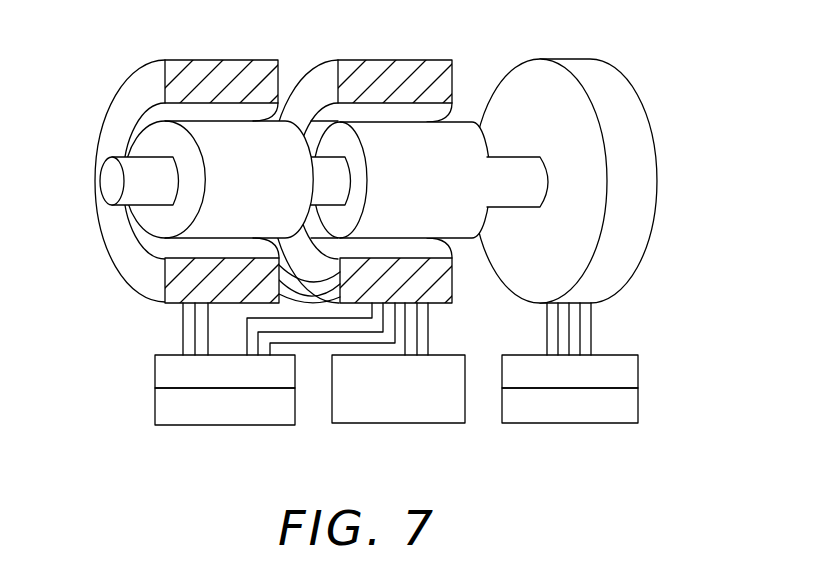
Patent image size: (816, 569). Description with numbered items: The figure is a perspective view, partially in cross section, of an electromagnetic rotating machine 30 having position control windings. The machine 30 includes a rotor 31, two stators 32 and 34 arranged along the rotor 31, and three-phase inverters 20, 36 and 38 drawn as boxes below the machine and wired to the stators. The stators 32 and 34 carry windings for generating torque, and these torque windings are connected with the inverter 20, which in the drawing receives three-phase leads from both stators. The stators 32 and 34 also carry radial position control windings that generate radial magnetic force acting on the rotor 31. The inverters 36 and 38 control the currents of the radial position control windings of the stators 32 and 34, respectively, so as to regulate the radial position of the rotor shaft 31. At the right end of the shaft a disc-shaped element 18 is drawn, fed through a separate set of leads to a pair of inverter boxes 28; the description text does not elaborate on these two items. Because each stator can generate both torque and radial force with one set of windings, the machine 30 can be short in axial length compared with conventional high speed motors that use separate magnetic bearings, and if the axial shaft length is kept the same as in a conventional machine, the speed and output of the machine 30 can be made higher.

The flywheel 18 is at (562, 59).
The three-phase inverter 20 is at (409, 427).
The inverters 28 is at (638, 377).
The electromagnetic rotating machine 30 is at (660, 81).
The rotor 31 is at (101, 181).
The stator 32 is at (221, 60).
The stator 34 is at (398, 60).
The three-phase inverter 36 is at (155, 372).
The three-phase inverter 38 is at (155, 410).